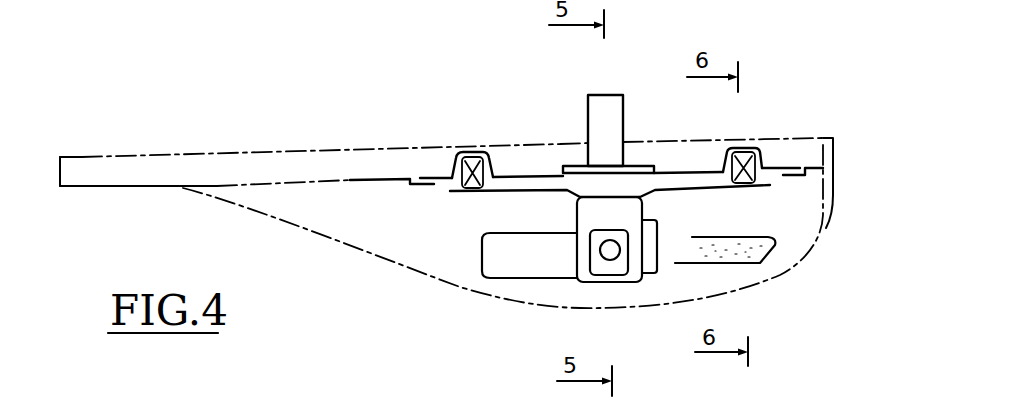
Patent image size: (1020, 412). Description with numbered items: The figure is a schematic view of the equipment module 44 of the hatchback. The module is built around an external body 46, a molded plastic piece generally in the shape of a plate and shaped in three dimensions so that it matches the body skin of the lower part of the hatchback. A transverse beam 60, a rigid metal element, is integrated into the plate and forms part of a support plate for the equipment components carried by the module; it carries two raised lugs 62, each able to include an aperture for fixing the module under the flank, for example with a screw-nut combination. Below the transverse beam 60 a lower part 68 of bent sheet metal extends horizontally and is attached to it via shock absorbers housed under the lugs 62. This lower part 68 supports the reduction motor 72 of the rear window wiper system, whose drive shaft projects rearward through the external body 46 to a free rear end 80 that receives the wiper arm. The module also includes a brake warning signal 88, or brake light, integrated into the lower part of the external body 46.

The equipment module 44 is at (289, 140).
The external body 46 is at (323, 244).
The transverse beam 60 is at (527, 166).
The raised lugs 62 is at (482, 152).
The lower part 68 is at (486, 201).
The reduction motor 72 is at (546, 289).
The free rear end 80 is at (470, 153).
The brake warning signal 88 is at (775, 261).